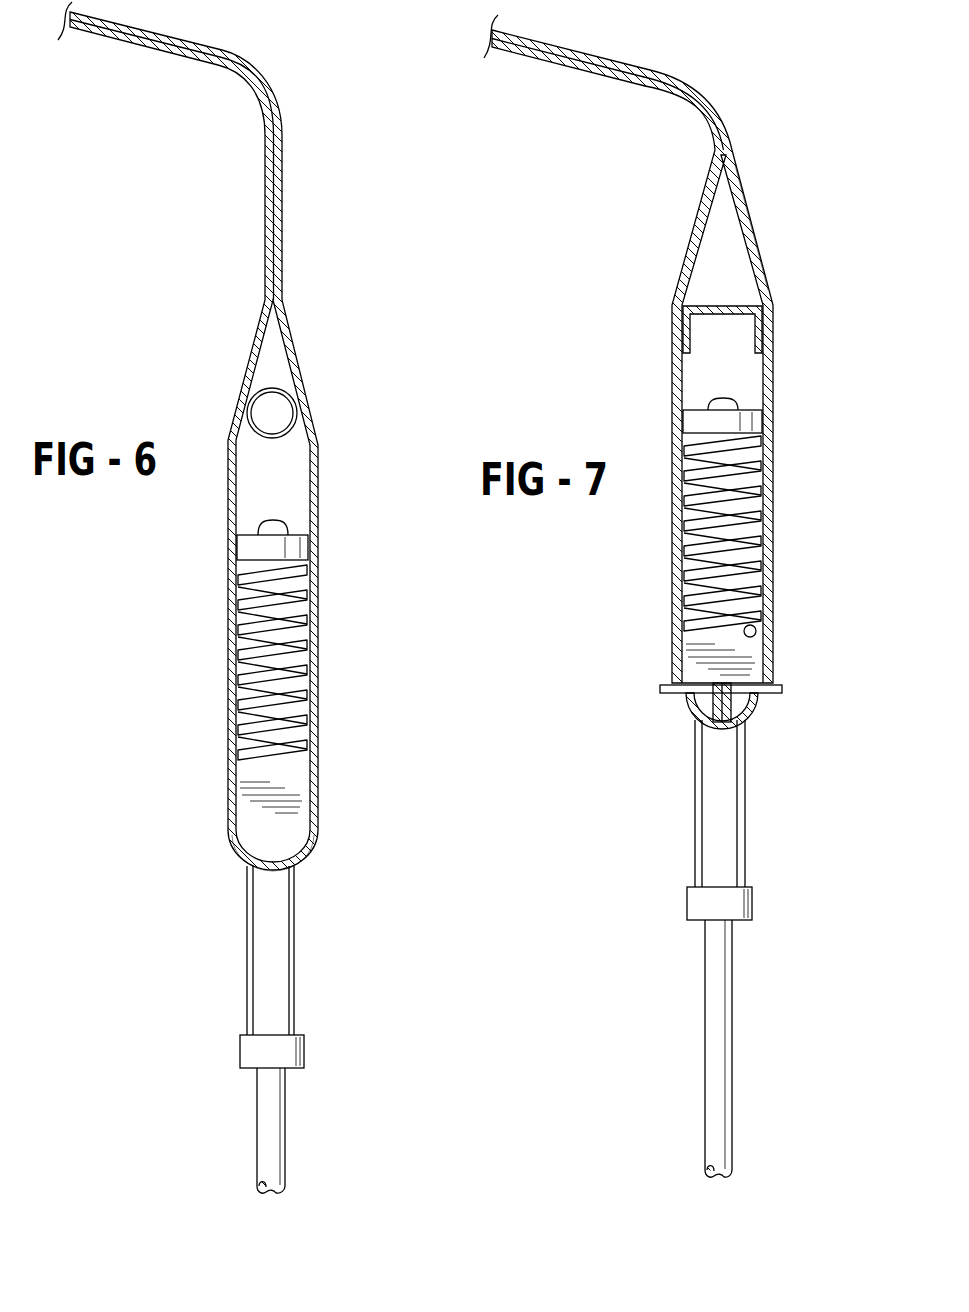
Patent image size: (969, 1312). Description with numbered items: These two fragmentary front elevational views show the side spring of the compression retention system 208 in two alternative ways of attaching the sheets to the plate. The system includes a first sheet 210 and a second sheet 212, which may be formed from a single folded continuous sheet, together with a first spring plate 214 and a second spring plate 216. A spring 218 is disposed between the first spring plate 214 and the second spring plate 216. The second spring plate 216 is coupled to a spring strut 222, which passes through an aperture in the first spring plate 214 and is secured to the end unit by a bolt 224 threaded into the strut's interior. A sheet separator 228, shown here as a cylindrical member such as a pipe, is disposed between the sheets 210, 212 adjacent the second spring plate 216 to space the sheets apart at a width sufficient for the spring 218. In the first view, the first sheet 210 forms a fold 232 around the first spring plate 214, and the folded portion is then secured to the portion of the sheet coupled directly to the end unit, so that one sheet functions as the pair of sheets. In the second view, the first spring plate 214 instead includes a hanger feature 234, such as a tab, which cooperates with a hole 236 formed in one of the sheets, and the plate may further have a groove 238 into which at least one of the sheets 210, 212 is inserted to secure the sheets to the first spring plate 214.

In FIG. 6, the compression retention system 208 is at (230, 597).
In FIG. 7, the compression retention system 208 is at (672, 596).
In FIG. 6, the first sheet 210 is at (252, 370).
In FIG. 7, the first sheet 210 is at (684, 262).
In FIG. 7, the second sheet 212 is at (745, 229).
In FIG. 6, the first spring plate 214 is at (293, 778).
In FIG. 7, the first spring plate 214 is at (752, 652).
In FIG. 6, the second spring plate 216 is at (292, 548).
In FIG. 7, the second spring plate 216 is at (750, 424).
In FIG. 6, the spring 218 is at (298, 608).
In FIG. 7, the spring 218 is at (752, 495).
In FIG. 6, the spring strut 222 is at (293, 980).
In FIG. 7, the spring strut 222 is at (745, 836).
In FIG. 6, the bolt 224 is at (283, 1140).
In FIG. 7, the bolt 224 is at (733, 1040).
In FIG. 6, the sheet separator 228 is at (308, 443).
In FIG. 7, the sheet separator 228 is at (738, 305).
In FIG. 6, the fold 232 is at (300, 870).
In FIG. 7, the hanger feature 234 is at (780, 691).
In FIG. 7, the hole 236 is at (760, 712).
In FIG. 7, the groove 238 is at (692, 714).